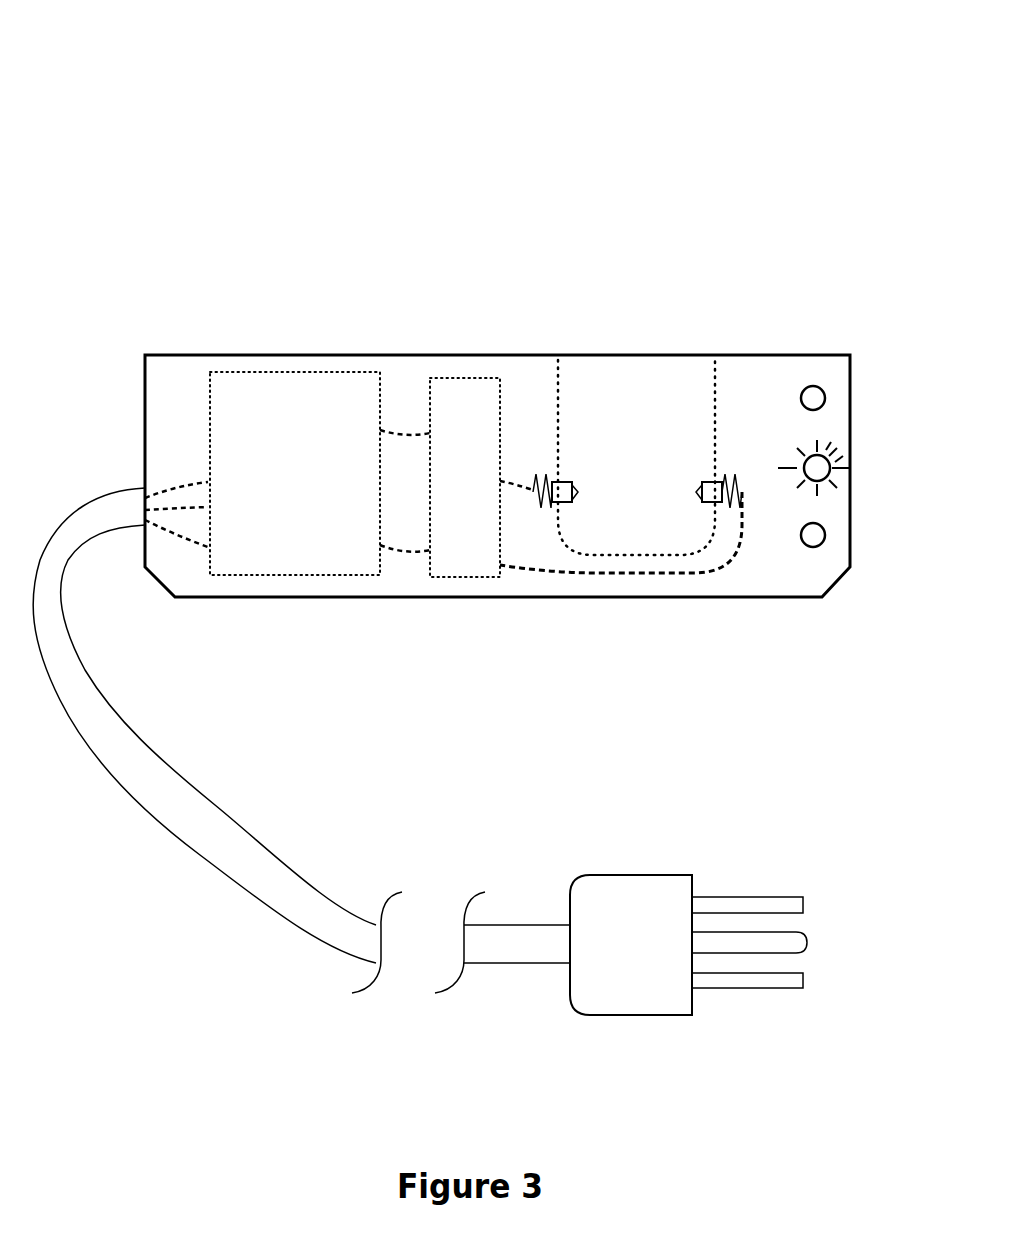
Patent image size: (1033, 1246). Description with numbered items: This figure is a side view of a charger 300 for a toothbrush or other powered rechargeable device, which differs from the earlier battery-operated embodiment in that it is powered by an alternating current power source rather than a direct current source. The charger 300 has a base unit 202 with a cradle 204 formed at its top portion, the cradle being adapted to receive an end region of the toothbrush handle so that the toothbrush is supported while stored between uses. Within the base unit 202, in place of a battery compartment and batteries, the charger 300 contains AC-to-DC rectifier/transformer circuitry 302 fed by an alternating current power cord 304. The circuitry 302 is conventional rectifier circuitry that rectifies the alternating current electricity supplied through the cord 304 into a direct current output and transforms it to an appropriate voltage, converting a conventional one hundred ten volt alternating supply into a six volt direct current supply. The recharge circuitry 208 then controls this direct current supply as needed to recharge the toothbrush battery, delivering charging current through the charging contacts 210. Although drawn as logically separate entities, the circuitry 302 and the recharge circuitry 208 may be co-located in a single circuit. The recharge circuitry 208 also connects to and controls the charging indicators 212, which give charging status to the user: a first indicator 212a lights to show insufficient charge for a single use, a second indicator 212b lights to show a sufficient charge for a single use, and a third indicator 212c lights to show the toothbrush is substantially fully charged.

The charger 300 is at (243, 163).
The base unit 202 is at (182, 412).
The cradle 204 is at (583, 347).
The recharge circuitry 208 is at (470, 577).
The charging contacts 210 is at (710, 497).
The charging indicators 212 is at (828, 432).
The first indicator 212a is at (801, 388).
The second indicator 212b is at (802, 480).
The third indicator 212c is at (803, 545).
The AC-to-DC rectifier/transformer circuitry 302 is at (323, 543).
The alternating current power cord 304 is at (167, 812).